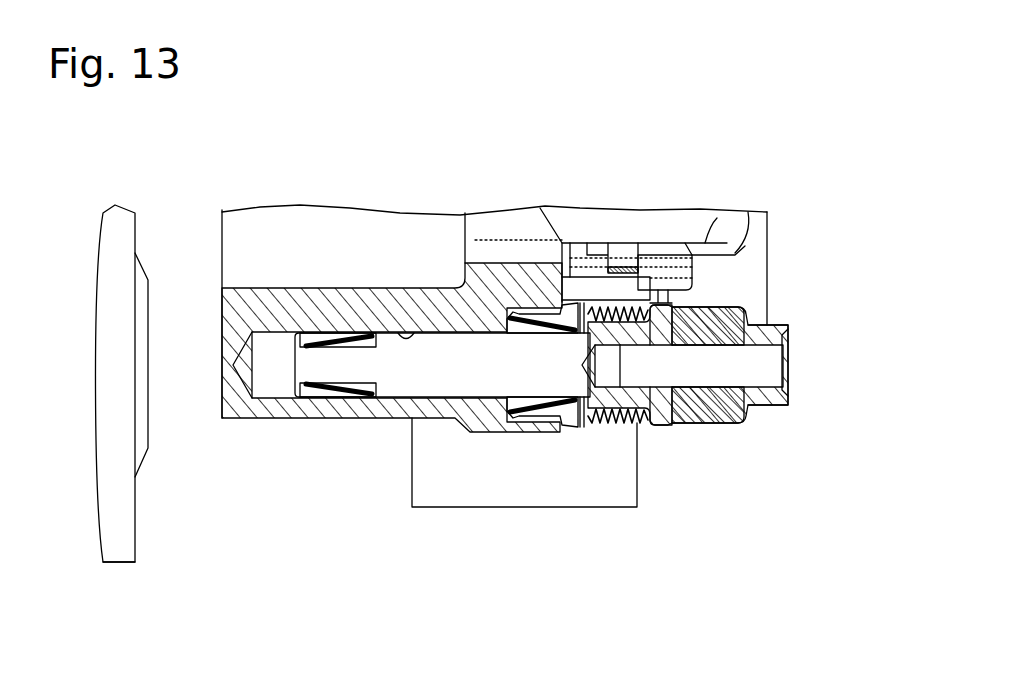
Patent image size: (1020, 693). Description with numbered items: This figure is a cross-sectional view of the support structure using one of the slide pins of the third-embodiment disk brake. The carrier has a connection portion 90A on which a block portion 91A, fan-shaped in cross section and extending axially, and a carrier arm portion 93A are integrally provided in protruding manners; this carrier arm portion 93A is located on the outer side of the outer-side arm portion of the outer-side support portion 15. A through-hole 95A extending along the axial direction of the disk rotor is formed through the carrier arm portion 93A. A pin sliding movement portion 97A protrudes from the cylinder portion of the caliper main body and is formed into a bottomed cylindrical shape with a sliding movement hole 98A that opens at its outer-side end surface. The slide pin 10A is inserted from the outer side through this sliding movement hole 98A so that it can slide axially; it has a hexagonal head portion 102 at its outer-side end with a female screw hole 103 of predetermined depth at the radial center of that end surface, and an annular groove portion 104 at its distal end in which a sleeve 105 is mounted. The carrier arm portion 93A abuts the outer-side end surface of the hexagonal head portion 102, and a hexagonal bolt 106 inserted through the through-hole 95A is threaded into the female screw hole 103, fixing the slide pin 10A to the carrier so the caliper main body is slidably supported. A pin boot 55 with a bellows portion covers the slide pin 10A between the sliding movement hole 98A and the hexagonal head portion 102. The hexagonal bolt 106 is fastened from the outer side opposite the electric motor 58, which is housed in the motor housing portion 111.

The slide pin 10A is at (463, 353).
The outer-side support portion 15 is at (764, 254).
The pin boot 55 is at (543, 306).
The electric motor 58 is at (119, 548).
The connection portion 90A is at (492, 487).
The block portion 91A is at (524, 500).
The carrier arm portion 93A is at (708, 423).
The through-hole 95A is at (755, 410).
The pin sliding movement portion 97A is at (372, 420).
The sliding movement hole 98A is at (398, 342).
The hexagonal head portion 102 is at (660, 423).
The female screw hole 103 is at (615, 352).
The annular groove portion 104 is at (322, 334).
The sleeve 105 is at (320, 398).
The hexagonal bolt 106 is at (790, 365).
The motor housing portion 111 is at (136, 534).